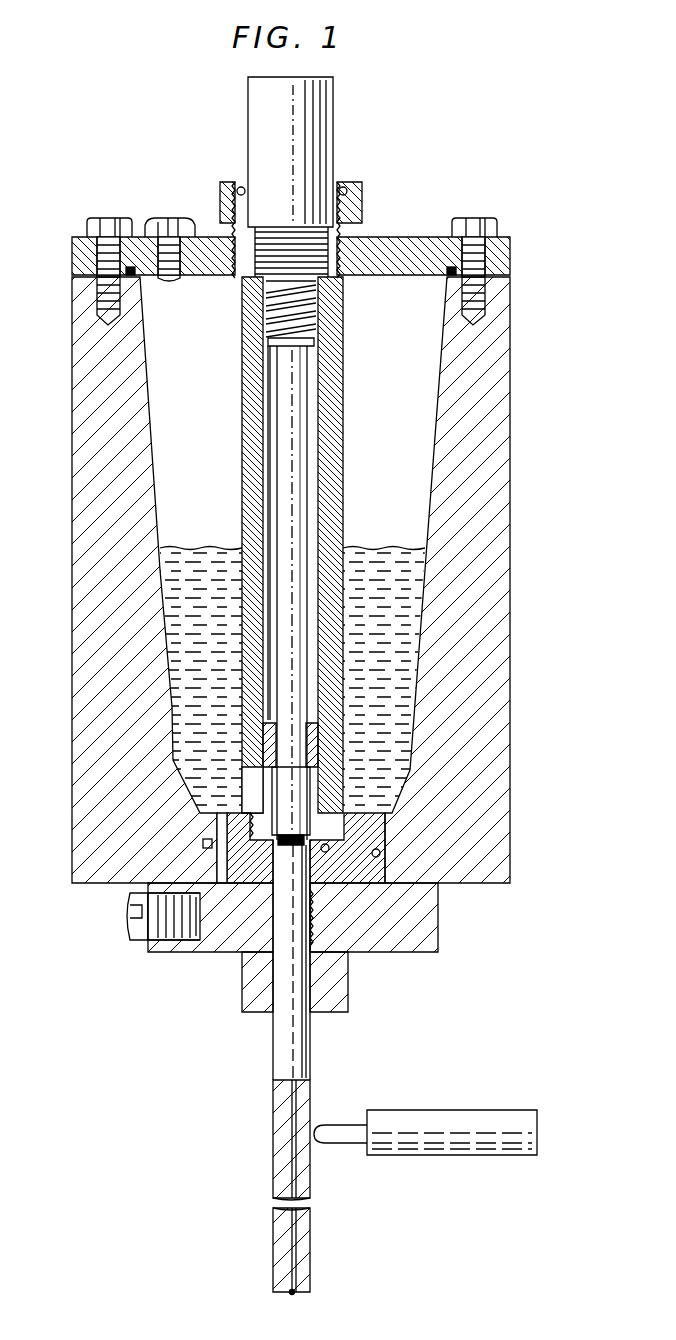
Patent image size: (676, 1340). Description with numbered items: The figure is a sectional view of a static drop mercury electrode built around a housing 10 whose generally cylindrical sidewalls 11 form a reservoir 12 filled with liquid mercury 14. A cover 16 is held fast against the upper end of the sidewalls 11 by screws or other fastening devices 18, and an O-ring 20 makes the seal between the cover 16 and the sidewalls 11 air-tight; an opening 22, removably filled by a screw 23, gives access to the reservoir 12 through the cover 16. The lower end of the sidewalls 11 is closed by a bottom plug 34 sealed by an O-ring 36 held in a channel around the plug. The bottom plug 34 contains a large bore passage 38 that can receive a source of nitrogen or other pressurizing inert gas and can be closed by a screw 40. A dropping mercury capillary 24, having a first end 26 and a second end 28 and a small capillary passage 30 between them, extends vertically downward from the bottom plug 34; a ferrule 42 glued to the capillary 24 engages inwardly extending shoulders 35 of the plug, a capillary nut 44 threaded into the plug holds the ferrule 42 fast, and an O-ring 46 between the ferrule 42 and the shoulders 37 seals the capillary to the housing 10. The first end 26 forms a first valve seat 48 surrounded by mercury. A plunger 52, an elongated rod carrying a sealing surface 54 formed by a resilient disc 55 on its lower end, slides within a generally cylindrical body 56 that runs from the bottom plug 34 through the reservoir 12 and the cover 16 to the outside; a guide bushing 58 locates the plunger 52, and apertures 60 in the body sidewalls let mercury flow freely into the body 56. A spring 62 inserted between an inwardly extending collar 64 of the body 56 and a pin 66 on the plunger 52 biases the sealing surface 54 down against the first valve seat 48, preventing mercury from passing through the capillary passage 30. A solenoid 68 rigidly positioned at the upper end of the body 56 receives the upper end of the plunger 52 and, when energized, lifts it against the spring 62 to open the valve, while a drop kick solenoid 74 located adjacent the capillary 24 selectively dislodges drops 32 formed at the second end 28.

The housing 10 is at (510, 467).
The sidewalls 11 is at (478, 568).
The reservoir 12 is at (418, 380).
The liquid mercury 14 is at (388, 674).
The cover 16 is at (388, 243).
The fastening devices 18 is at (92, 222).
The O-ring 20 is at (452, 277).
The opening 22 is at (182, 258).
The screw 23 is at (172, 218).
The dropping mercury capillary 24 is at (310, 1047).
The first end 26 is at (296, 870).
The second end 28 is at (310, 1282).
The capillary passage 30 is at (298, 1093).
The drops 32 is at (290, 1292).
The bottom plug 34 is at (438, 925).
The inwardly extending shoulders 35 is at (330, 855).
The O-ring 36 is at (203, 843).
The inwardly extending shoulders 37 is at (365, 825).
The large bore passage 38 is at (220, 865).
The screw 40 is at (128, 930).
The ferrule 42 is at (325, 925).
The capillary nut 44 is at (245, 993).
The O-ring 46 is at (370, 838).
The first valve seat 48 is at (252, 845).
The plunger 52 is at (277, 413).
The sealing surface 54 is at (300, 822).
The disc 55 is at (310, 790).
The body 56 is at (343, 413).
The guide bushing 58 is at (318, 745).
The apertures 60 is at (248, 790).
The spring 62 is at (270, 316).
The collar 64 is at (343, 297).
The pin 66 is at (268, 342).
The solenoid 68 is at (333, 110).
The drop kick solenoid 74 is at (500, 1120).